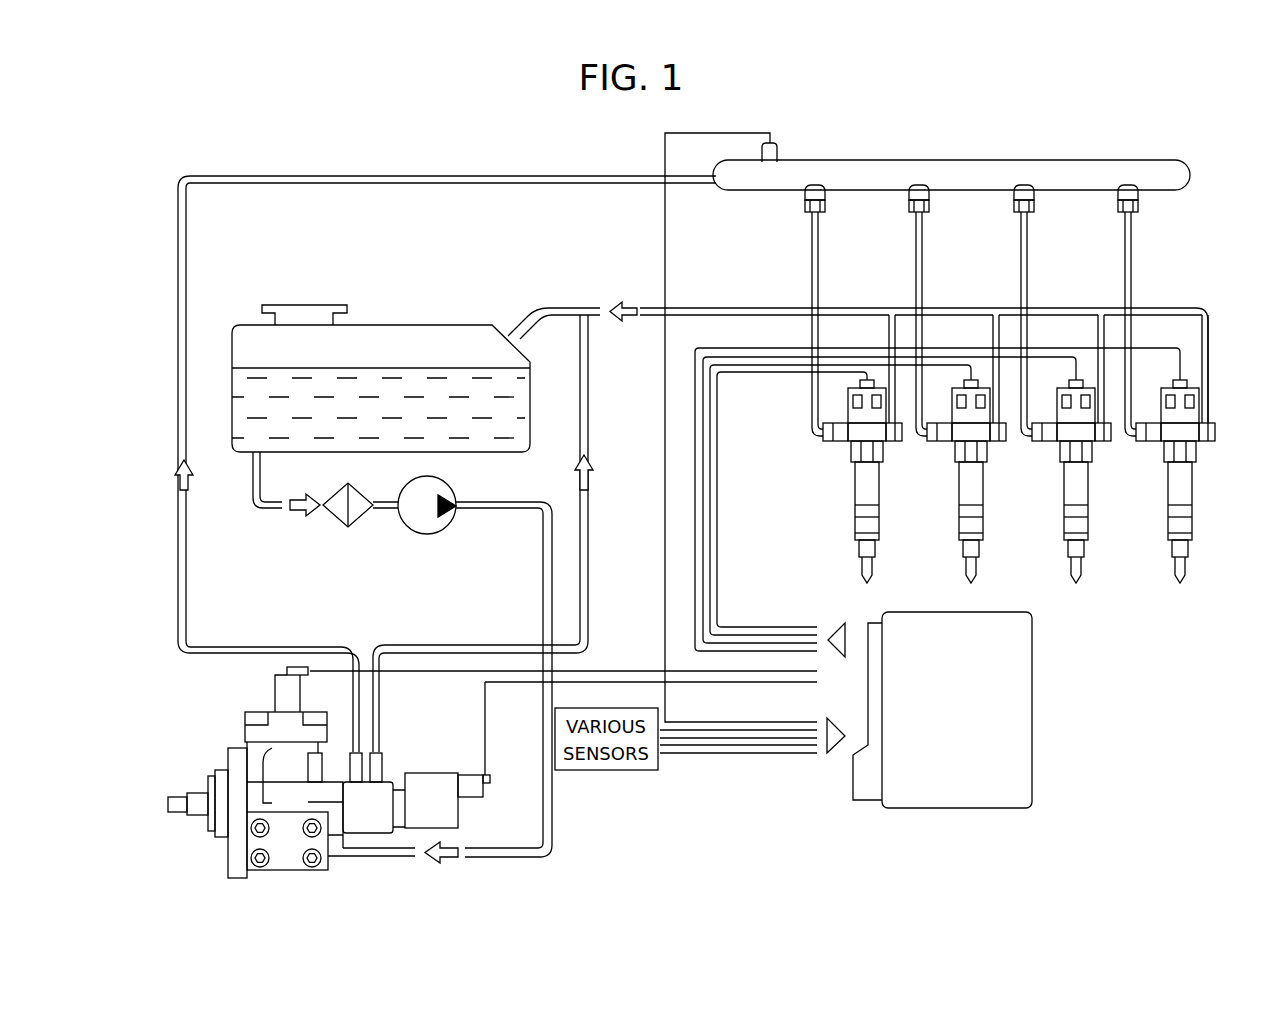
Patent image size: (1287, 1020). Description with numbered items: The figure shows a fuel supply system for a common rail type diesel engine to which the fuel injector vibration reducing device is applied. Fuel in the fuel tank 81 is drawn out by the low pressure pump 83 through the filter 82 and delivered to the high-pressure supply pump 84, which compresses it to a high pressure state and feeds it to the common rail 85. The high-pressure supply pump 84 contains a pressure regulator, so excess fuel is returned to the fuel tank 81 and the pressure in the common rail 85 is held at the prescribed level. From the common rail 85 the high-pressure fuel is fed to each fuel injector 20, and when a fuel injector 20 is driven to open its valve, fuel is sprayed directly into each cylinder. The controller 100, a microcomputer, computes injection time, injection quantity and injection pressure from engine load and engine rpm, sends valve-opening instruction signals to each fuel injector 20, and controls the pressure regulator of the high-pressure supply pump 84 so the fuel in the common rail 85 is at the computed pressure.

The fuel injector 20 is at (1193, 520).
The fuel tank 81 is at (392, 340).
The filter 82 is at (346, 528).
The low pressure pump 83 is at (427, 535).
The high-pressure supply pump 84 is at (196, 820).
The common rail 85 is at (990, 170).
The controller 100 is at (1032, 740).